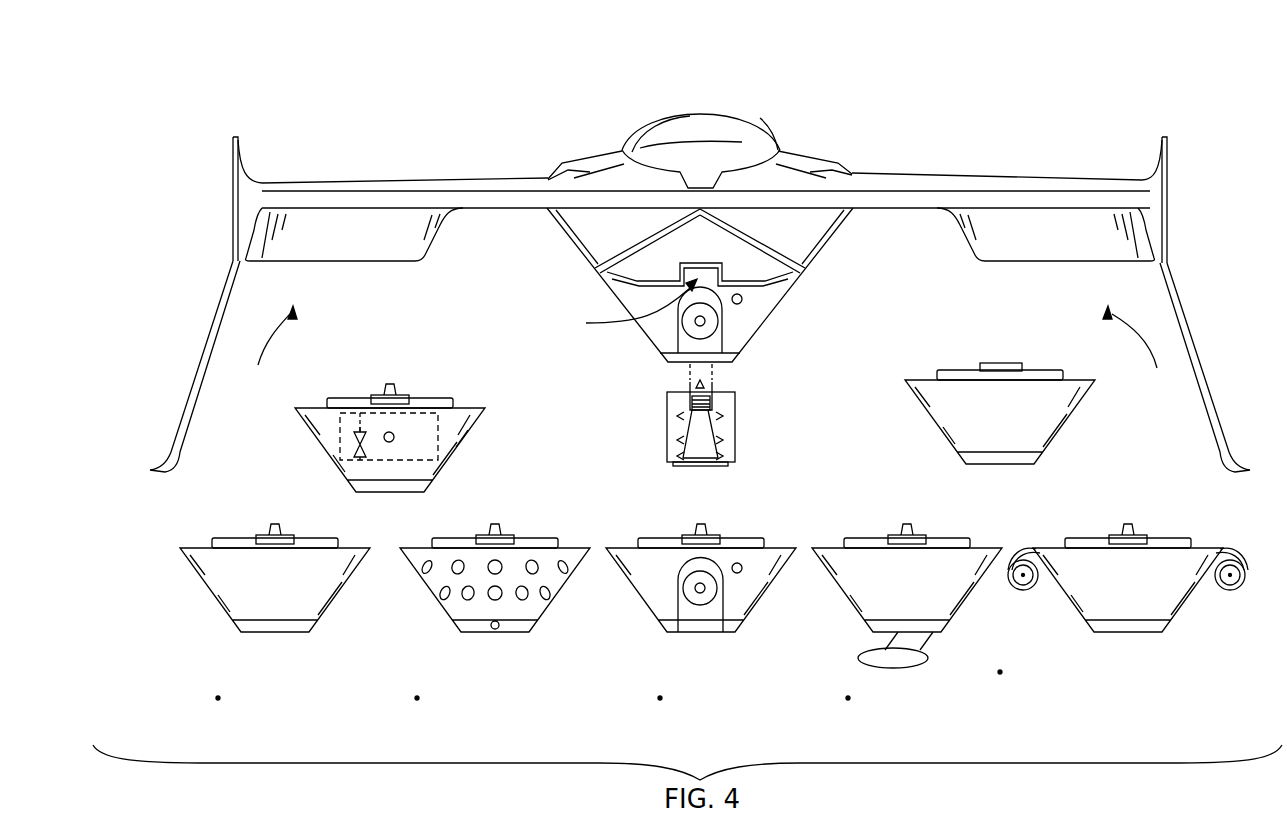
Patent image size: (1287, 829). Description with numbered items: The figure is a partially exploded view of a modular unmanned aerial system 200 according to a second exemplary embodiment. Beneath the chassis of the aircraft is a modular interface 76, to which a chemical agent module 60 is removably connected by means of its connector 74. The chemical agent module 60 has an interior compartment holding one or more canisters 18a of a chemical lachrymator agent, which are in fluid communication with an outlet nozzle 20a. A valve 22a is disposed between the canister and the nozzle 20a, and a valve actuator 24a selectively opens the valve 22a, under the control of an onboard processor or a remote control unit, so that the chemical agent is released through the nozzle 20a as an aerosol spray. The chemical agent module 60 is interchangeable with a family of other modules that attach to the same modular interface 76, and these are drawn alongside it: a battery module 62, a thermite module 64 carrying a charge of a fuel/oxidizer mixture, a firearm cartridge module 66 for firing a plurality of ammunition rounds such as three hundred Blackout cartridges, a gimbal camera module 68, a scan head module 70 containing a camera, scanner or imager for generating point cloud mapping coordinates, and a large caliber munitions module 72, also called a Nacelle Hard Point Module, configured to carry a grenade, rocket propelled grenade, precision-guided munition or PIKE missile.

The modular unmanned aerial system 200 is at (510, 113).
The chemical agent module 60 is at (322, 448).
The connector 74 is at (394, 386).
The valve actuator 24a is at (360, 414).
The valve 22a is at (358, 459).
The outlet nozzle 20a is at (389, 442).
The canister 18a is at (456, 452).
The modular interface 76 is at (667, 445).
The battery module 62 is at (1067, 420).
The thermite module 64 is at (289, 617).
The firearm cartridge module 66 is at (509, 617).
The gimbal camera module 68 is at (717, 617).
The scan head module 70 is at (923, 617).
The large caliber munitions module 72 is at (1126, 618).